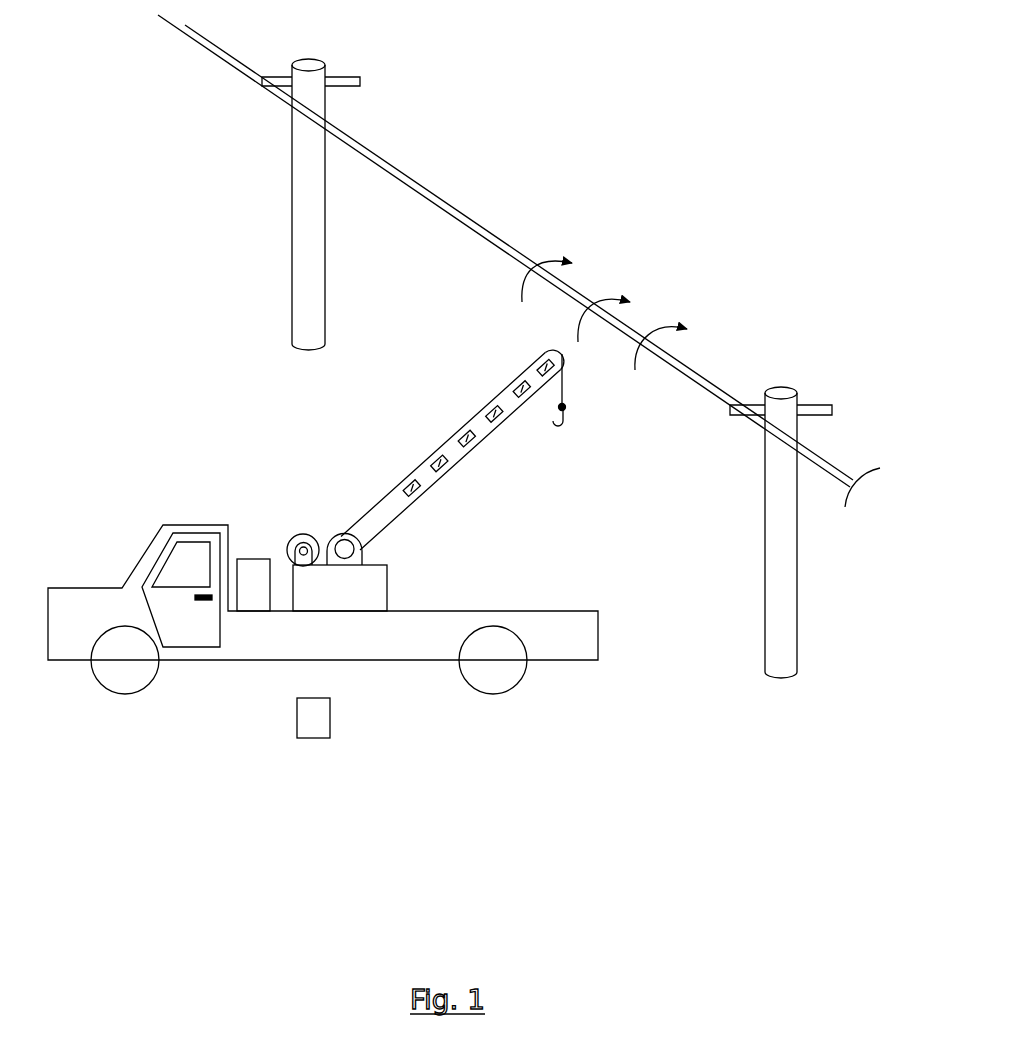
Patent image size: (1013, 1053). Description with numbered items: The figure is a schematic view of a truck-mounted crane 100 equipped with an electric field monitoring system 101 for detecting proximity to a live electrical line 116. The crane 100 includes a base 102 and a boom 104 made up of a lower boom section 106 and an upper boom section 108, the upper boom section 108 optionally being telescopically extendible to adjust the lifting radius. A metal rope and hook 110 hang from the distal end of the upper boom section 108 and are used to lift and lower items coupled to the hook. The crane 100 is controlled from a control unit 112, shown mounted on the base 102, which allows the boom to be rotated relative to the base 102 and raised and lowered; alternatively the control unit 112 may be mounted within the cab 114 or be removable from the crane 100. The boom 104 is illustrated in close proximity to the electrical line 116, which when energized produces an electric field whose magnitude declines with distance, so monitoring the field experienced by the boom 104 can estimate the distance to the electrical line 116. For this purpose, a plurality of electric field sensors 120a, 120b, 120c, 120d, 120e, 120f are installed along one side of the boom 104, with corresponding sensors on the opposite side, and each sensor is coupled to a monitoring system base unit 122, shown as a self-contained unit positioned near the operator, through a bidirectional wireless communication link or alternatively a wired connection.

The truck-mounted crane 100 is at (97, 463).
The electric field monitoring system 101 is at (399, 368).
The base 102 is at (249, 683).
The boom 104 is at (423, 433).
The lower boom section 106 is at (359, 487).
The upper boom section 108 is at (516, 343).
The metal rope and hook 110 is at (566, 409).
The control unit 112 is at (257, 558).
The cab 114 is at (156, 552).
The electrical line 116 is at (396, 168).
The electric field sensor 120a is at (563, 362).
The electric field sensor 120b is at (527, 396).
The electric field sensor 120c is at (500, 421).
The electric field sensor 120d is at (472, 446).
The electric field sensor 120e is at (445, 470).
The electric field sensor 120f is at (417, 495).
The monitoring system base unit 122 is at (317, 718).